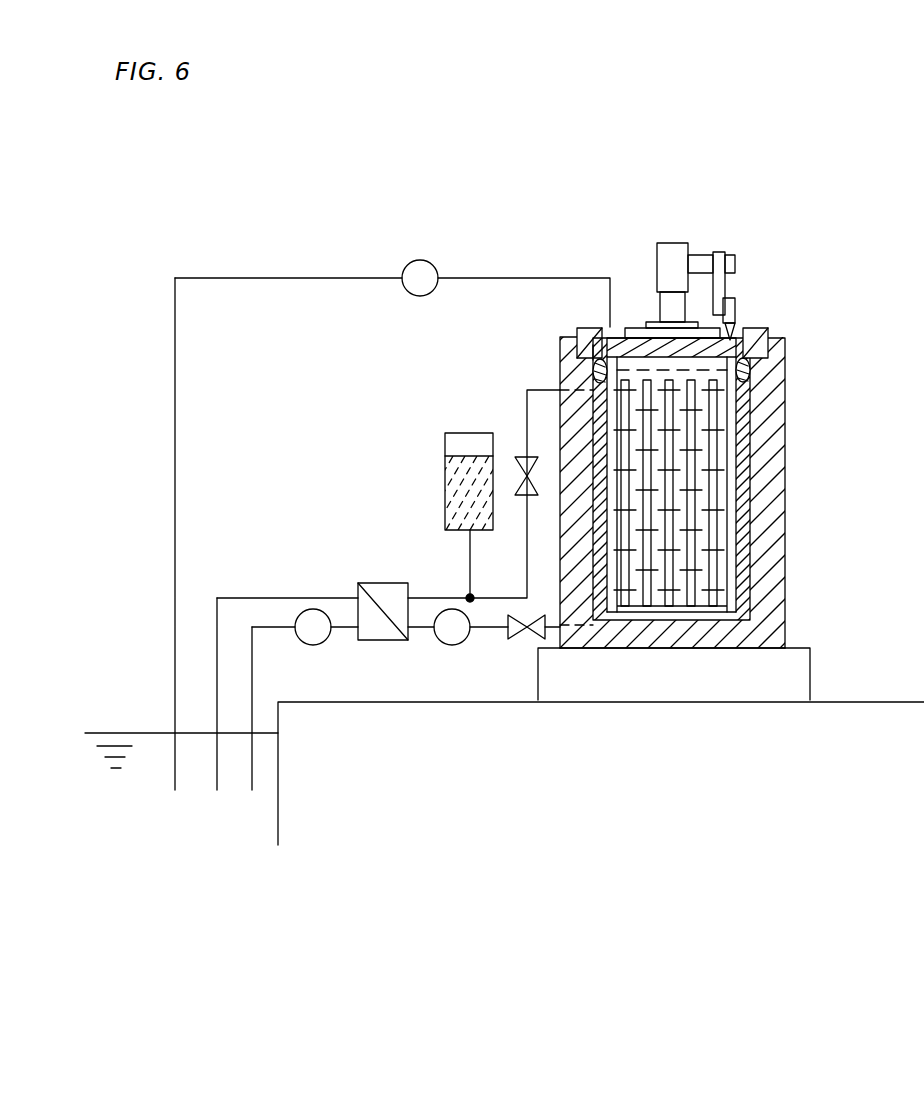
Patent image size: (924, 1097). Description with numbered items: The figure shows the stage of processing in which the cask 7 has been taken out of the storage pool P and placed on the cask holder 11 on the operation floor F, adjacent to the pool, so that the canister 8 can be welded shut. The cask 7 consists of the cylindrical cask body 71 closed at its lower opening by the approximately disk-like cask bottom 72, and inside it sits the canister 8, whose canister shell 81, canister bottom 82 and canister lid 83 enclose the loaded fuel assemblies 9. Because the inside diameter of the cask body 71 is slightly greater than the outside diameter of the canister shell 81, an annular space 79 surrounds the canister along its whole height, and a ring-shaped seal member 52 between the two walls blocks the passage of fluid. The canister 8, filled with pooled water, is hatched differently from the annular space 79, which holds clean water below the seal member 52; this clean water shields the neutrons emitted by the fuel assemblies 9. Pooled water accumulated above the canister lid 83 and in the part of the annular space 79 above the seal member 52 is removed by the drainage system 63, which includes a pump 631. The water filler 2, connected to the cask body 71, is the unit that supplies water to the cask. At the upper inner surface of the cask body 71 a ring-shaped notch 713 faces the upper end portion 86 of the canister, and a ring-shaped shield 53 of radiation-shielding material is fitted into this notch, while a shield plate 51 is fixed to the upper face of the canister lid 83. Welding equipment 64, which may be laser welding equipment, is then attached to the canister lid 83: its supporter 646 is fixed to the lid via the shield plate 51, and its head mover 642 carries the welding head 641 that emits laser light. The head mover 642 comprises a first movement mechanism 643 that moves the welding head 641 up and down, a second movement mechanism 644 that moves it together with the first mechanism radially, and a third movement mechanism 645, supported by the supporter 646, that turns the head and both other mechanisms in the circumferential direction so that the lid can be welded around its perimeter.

The water filler 2 is at (395, 503).
The cask 7 is at (582, 472).
The canister 8 is at (619, 530).
The fuel assemblies 9 is at (648, 600).
The cask holder 11 is at (733, 688).
The shield plate 51 is at (640, 333).
The seal member 52 is at (595, 369).
The ring-shaped shield 53 is at (597, 360).
The drainage system 63 is at (392, 244).
The pump 631 is at (420, 262).
The welding equipment 64 is at (709, 226).
The welding head 641 is at (734, 312).
The head mover 642 is at (752, 239).
The first movement mechanism 643 is at (738, 282).
The second movement mechanism 644 is at (735, 246).
The third movement mechanism 645 is at (673, 246).
The supporter 646 is at (670, 310).
The cask body 71 is at (766, 553).
The cask bottom 72 is at (737, 605).
The annular space 79 is at (745, 482).
The canister shell 81 is at (747, 428).
The canister bottom 82 is at (700, 617).
The canister lid 83 is at (745, 362).
The upper end portion 86 is at (770, 340).
The ring-shaped notch 713 is at (590, 340).
The storage pool P is at (154, 768).
The operation floor F is at (830, 695).